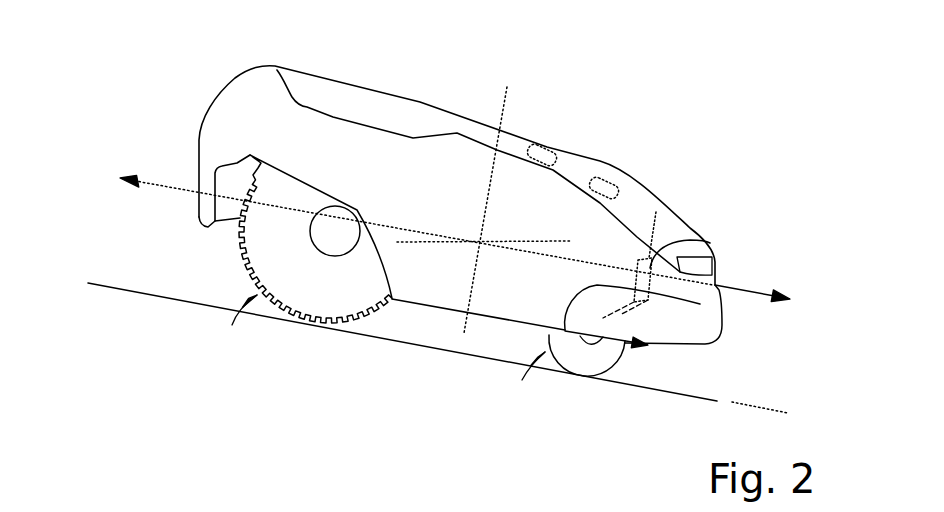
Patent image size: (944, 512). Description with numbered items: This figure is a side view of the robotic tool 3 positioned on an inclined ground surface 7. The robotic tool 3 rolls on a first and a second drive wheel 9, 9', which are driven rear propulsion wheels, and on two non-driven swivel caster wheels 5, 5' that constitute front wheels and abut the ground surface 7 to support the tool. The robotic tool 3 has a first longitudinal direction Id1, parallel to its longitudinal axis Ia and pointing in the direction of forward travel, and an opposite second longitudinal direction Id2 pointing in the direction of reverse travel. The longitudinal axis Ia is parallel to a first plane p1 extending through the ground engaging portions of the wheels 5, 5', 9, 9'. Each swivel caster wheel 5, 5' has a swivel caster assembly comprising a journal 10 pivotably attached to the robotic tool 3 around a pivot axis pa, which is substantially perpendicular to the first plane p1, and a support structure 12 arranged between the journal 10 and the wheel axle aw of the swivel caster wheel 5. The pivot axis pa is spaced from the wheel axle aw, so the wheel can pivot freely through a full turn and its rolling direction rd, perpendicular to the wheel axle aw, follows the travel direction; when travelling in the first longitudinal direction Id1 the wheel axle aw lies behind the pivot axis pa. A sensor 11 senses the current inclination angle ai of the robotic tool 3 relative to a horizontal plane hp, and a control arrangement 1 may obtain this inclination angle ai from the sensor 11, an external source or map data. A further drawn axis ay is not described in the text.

The robotic tool 3 is at (707, 153).
The control arrangement 1 is at (607, 183).
The sensor 11 is at (542, 153).
The journal 10 is at (658, 258).
The support structure 12 is at (617, 312).
The swivel caster wheel 5 is at (587, 387).
The swivel caster wheel 5' is at (524, 391).
The ground surface 7 is at (162, 298).
The first drive wheel 9 is at (315, 269).
The second drive wheel 9' is at (232, 332).
The pivot axis pa is at (657, 217).
The longitudinal axis Ia is at (373, 220).
The first longitudinal direction Id1 is at (752, 300).
The second longitudinal direction Id2 is at (163, 185).
The horizontal plane hp is at (532, 240).
The axis ay is at (504, 90).
The current inclination angle ai is at (433, 240).
The wheel axle aw is at (550, 328).
The rolling direction rd is at (622, 335).
The first plane p1 is at (767, 410).